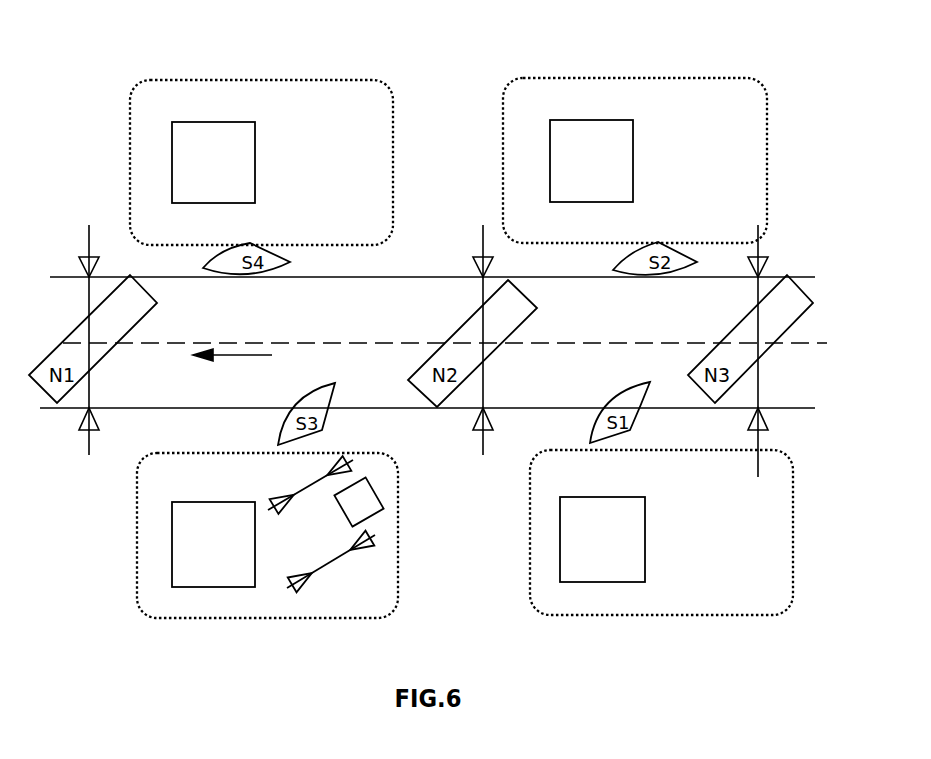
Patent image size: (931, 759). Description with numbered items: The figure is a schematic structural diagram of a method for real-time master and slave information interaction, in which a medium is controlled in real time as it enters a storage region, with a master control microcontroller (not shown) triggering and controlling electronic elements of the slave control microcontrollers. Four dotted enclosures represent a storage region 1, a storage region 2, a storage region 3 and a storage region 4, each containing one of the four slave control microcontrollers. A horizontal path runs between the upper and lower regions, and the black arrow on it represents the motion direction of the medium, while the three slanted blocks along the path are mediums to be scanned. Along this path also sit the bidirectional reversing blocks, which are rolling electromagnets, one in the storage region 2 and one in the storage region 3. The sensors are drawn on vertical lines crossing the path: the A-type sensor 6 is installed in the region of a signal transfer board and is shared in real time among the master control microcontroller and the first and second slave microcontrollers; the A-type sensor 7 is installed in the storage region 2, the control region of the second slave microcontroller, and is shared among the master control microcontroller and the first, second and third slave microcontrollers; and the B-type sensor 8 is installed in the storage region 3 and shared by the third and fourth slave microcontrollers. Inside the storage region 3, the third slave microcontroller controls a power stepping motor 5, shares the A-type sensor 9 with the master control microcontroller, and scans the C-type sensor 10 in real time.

The storage region 1 is at (628, 615).
The storage region 2 is at (595, 78).
The storage region 3 is at (208, 618).
The storage region 4 is at (208, 80).
The power stepping motor 5 is at (378, 485).
The A-type sensor 6 is at (754, 351).
The A-type sensor 7 is at (478, 340).
The B-type sensor 8 is at (83, 340).
The A-type sensor 9 is at (310, 485).
The C-type sensor 10 is at (331, 572).